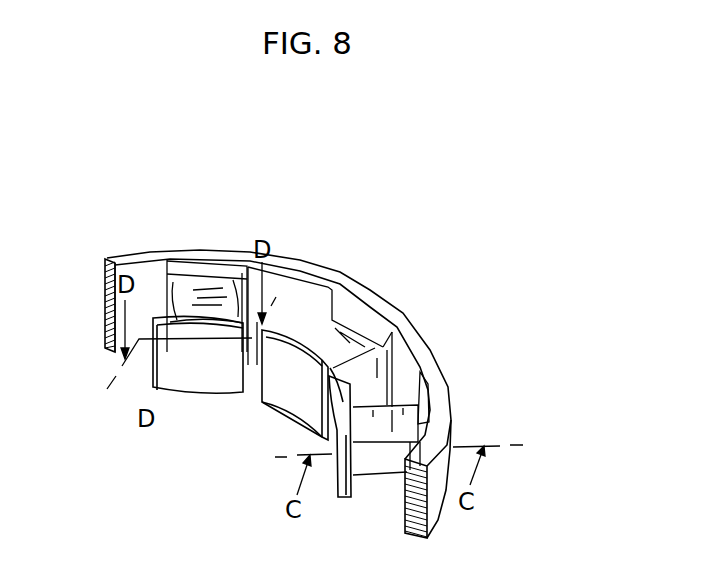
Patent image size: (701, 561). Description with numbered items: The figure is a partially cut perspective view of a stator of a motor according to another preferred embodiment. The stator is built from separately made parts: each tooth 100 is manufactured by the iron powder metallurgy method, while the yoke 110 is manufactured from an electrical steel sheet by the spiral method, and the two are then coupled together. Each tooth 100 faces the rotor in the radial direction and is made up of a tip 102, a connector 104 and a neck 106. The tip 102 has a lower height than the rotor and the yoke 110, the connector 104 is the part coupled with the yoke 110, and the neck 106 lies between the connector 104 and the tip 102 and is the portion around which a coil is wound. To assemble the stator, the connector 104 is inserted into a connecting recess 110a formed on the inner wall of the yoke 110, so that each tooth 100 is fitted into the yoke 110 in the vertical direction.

The tooth 100 is at (301, 343).
The tip 102 is at (221, 351).
The connector 104 is at (213, 278).
The neck 106 is at (191, 303).
The yoke 110 is at (418, 345).
The connecting recess 110a is at (367, 306).